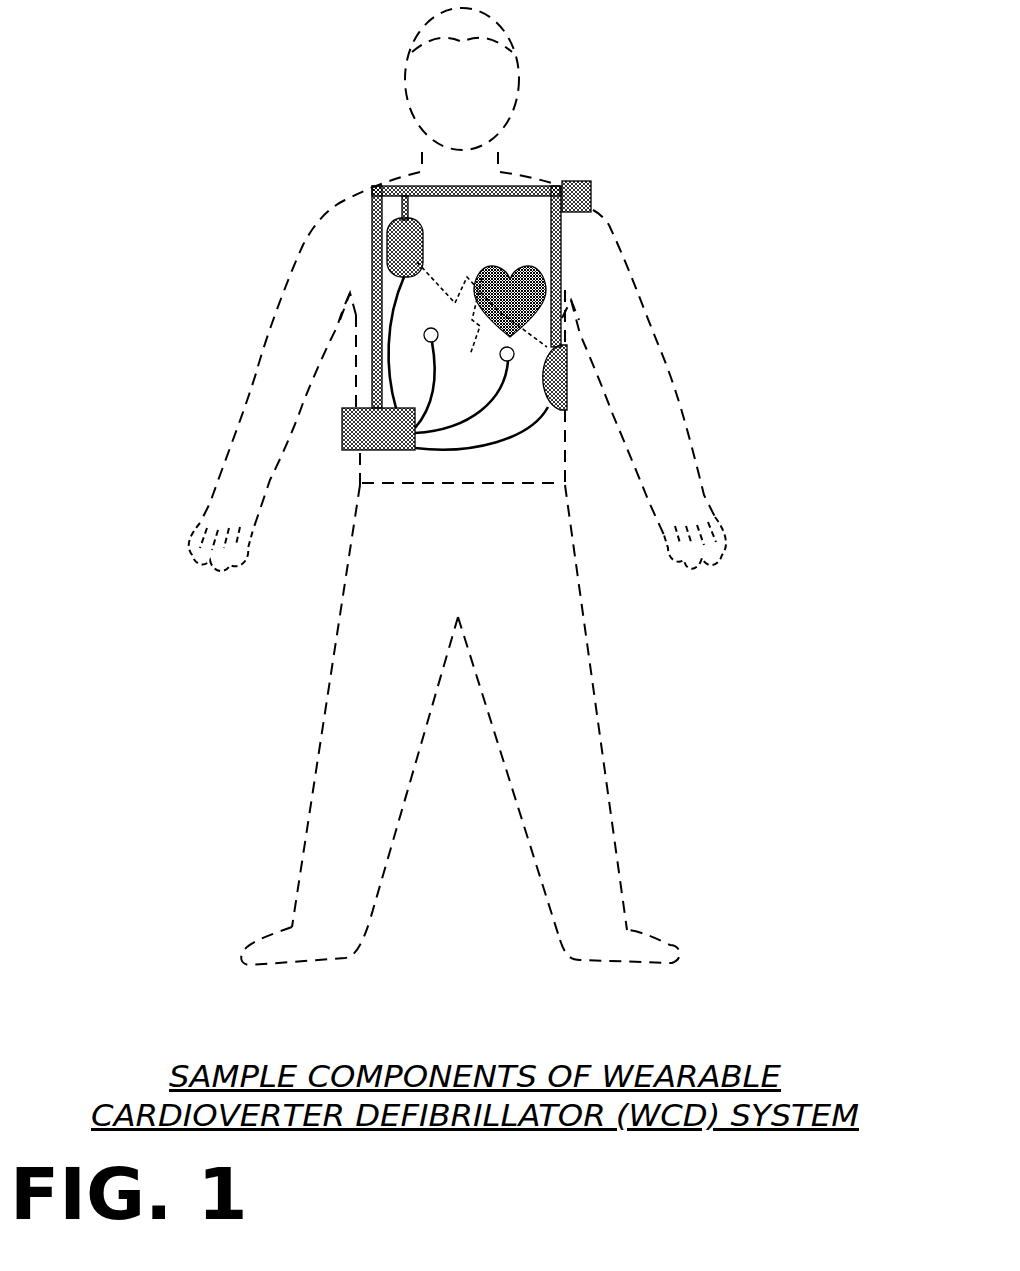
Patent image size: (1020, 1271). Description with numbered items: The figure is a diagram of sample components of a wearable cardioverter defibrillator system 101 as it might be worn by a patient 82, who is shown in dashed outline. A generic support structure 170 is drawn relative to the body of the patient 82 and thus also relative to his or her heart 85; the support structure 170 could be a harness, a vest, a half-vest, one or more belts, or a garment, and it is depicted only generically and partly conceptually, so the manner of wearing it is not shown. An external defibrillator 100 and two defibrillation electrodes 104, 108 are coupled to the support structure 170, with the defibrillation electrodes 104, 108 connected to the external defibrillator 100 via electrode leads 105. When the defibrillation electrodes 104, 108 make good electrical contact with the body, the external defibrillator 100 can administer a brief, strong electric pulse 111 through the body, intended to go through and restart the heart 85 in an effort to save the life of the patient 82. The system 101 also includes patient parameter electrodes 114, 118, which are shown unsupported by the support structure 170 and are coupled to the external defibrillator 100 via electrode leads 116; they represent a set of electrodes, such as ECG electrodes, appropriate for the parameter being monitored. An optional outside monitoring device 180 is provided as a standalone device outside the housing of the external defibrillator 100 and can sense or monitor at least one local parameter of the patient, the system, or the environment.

The patient 82 is at (395, 98).
The WCD system 101 is at (445, 257).
The support structure 170 is at (370, 213).
The defibrillation electrode 104 is at (422, 250).
The heart 85 is at (519, 268).
The outside monitoring device 180 is at (593, 190).
The electrode leads 105 is at (397, 337).
The patient parameter electrode 114 is at (422, 336).
The electric pulse 111 is at (497, 388).
The electrode leads 116 is at (441, 375).
The patient parameter electrode 118 is at (516, 363).
The defibrillation electrode 108 is at (570, 397).
The external defibrillator 100 is at (353, 440).